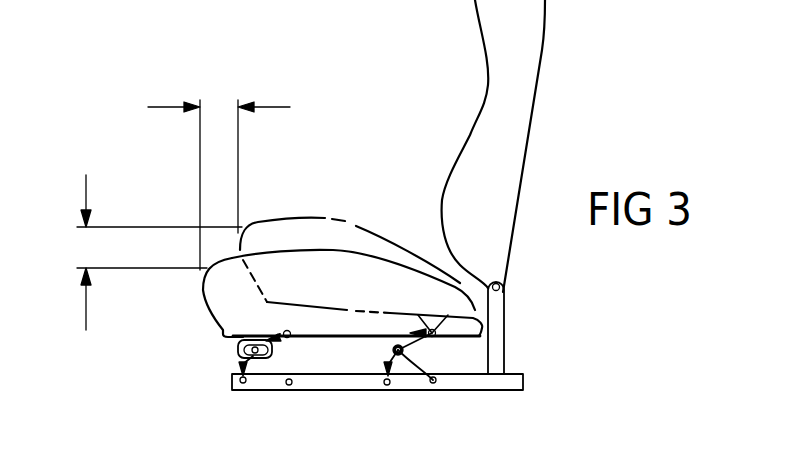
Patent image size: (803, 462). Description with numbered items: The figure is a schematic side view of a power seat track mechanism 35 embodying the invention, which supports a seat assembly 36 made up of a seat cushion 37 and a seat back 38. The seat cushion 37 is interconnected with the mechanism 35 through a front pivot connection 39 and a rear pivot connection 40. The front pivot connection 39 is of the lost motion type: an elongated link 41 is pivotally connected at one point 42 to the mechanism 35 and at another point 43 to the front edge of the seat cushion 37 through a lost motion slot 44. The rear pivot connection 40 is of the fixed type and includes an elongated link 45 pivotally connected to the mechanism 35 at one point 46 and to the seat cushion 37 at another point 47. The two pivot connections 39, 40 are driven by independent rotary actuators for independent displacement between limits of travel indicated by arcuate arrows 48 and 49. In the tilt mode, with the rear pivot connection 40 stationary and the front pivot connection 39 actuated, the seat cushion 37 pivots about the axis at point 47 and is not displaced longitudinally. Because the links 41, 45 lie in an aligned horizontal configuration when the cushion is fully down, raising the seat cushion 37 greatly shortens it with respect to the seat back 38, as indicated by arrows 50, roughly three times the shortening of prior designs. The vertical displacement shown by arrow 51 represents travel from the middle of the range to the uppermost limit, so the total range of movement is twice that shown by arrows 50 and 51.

The power seat track mechanism 35 is at (540, 328).
The seat assembly 36 is at (380, 112).
The seat cushion 37 is at (222, 297).
The seat back 38 is at (523, 52).
The front pivot connection 39 is at (205, 378).
The rear pivot connection 40 is at (490, 362).
The elongated link 41 is at (250, 360).
The point 42 is at (290, 386).
The point 43 is at (252, 358).
The lost motion slot 44 is at (235, 349).
The elongated link 45 is at (440, 382).
The point 46 is at (436, 387).
The point 47 is at (399, 356).
The arcuate arrow 48 is at (272, 340).
The arcuate arrow 49 is at (380, 365).
The arrows 50 is at (219, 180).
The arrow 51 is at (156, 252).